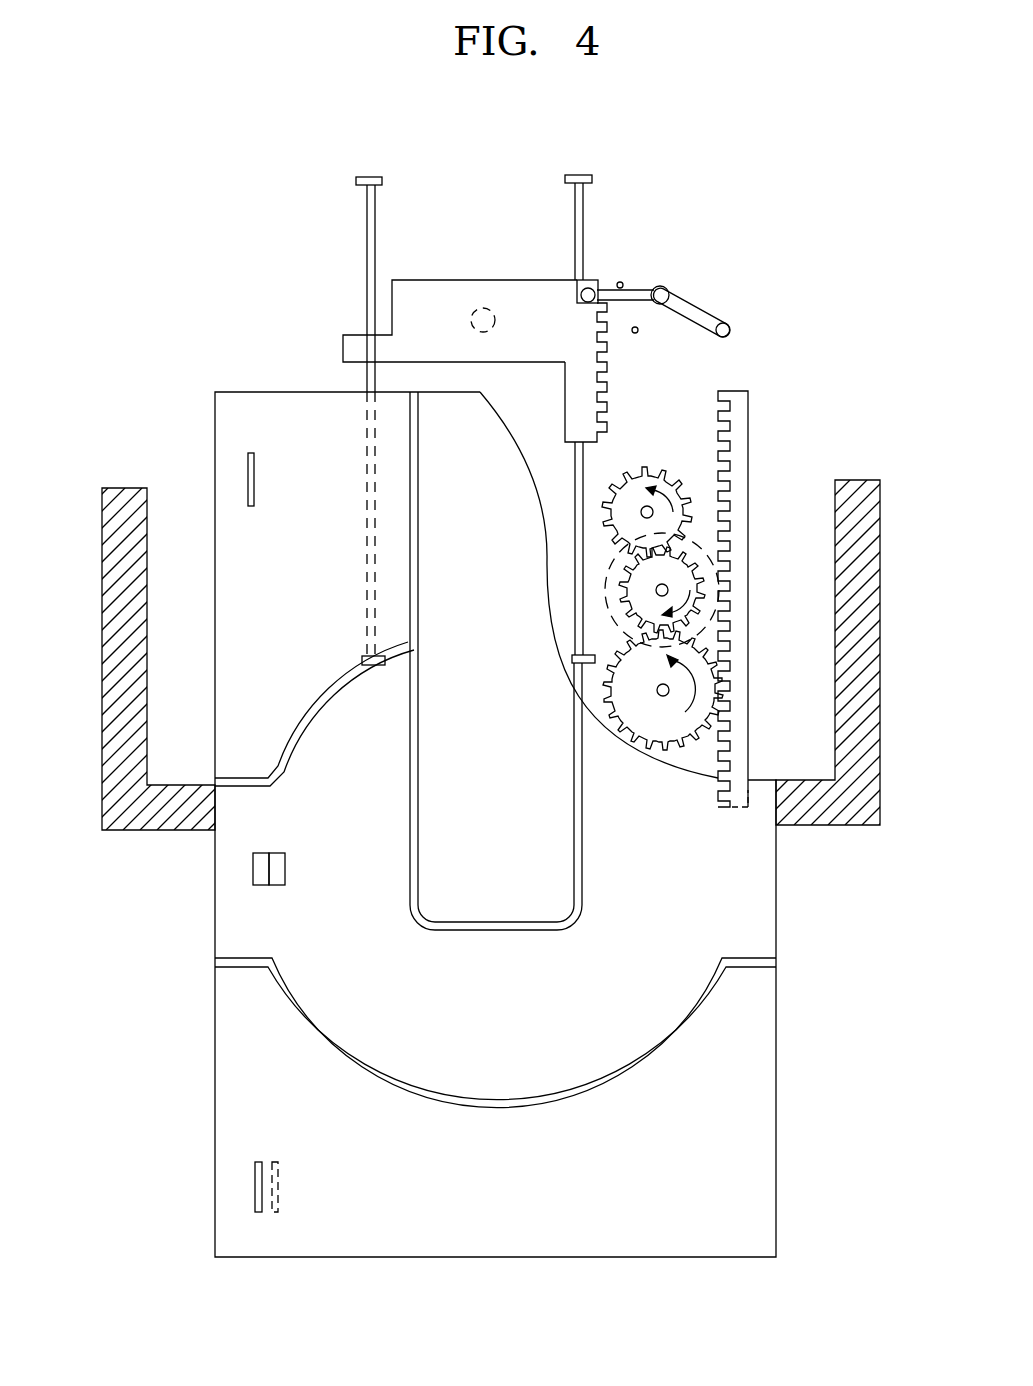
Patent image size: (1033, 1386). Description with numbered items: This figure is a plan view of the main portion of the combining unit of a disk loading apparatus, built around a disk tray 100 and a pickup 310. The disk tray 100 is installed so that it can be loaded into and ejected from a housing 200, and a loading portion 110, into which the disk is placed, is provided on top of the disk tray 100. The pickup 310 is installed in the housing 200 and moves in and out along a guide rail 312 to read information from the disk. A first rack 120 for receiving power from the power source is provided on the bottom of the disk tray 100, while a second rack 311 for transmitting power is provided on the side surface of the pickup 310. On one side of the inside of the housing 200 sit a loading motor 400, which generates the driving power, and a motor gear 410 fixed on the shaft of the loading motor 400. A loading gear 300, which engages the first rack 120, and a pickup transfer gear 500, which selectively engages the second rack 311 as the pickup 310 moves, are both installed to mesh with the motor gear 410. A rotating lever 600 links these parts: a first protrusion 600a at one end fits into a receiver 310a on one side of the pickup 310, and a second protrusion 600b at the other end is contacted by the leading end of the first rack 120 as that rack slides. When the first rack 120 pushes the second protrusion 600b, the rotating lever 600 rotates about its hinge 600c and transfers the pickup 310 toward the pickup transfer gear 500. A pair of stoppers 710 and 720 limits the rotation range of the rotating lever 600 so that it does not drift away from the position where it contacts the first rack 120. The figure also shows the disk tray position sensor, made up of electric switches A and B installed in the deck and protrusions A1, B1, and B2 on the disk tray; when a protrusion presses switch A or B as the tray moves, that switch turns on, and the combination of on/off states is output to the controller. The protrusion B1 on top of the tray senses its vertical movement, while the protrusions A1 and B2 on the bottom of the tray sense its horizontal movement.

The disk tray 100 is at (243, 1026).
The loading portion 110 is at (358, 1030).
The first rack 120 is at (735, 410).
The housing 200 is at (101, 806).
The loading gear 300 is at (700, 705).
The pickup 310 is at (447, 277).
The receiver 310a is at (578, 286).
The second rack 311 is at (603, 370).
The guide rail 312 is at (368, 225).
The loading motor 400 is at (604, 578).
The motor gear 410 is at (673, 572).
The pickup transfer gear 500 is at (652, 470).
The rotating lever 600 is at (697, 307).
The first protrusion 600a is at (582, 302).
The second protrusion 600b is at (730, 328).
The hinge 600c is at (666, 287).
The stopper 710 is at (621, 282).
The stopper 720 is at (639, 332).
The electric switch A is at (258, 886).
The electric switch B is at (275, 886).
The protrusion A1 is at (258, 1213).
The protrusion B1 is at (280, 1190).
The protrusion B2 is at (256, 478).